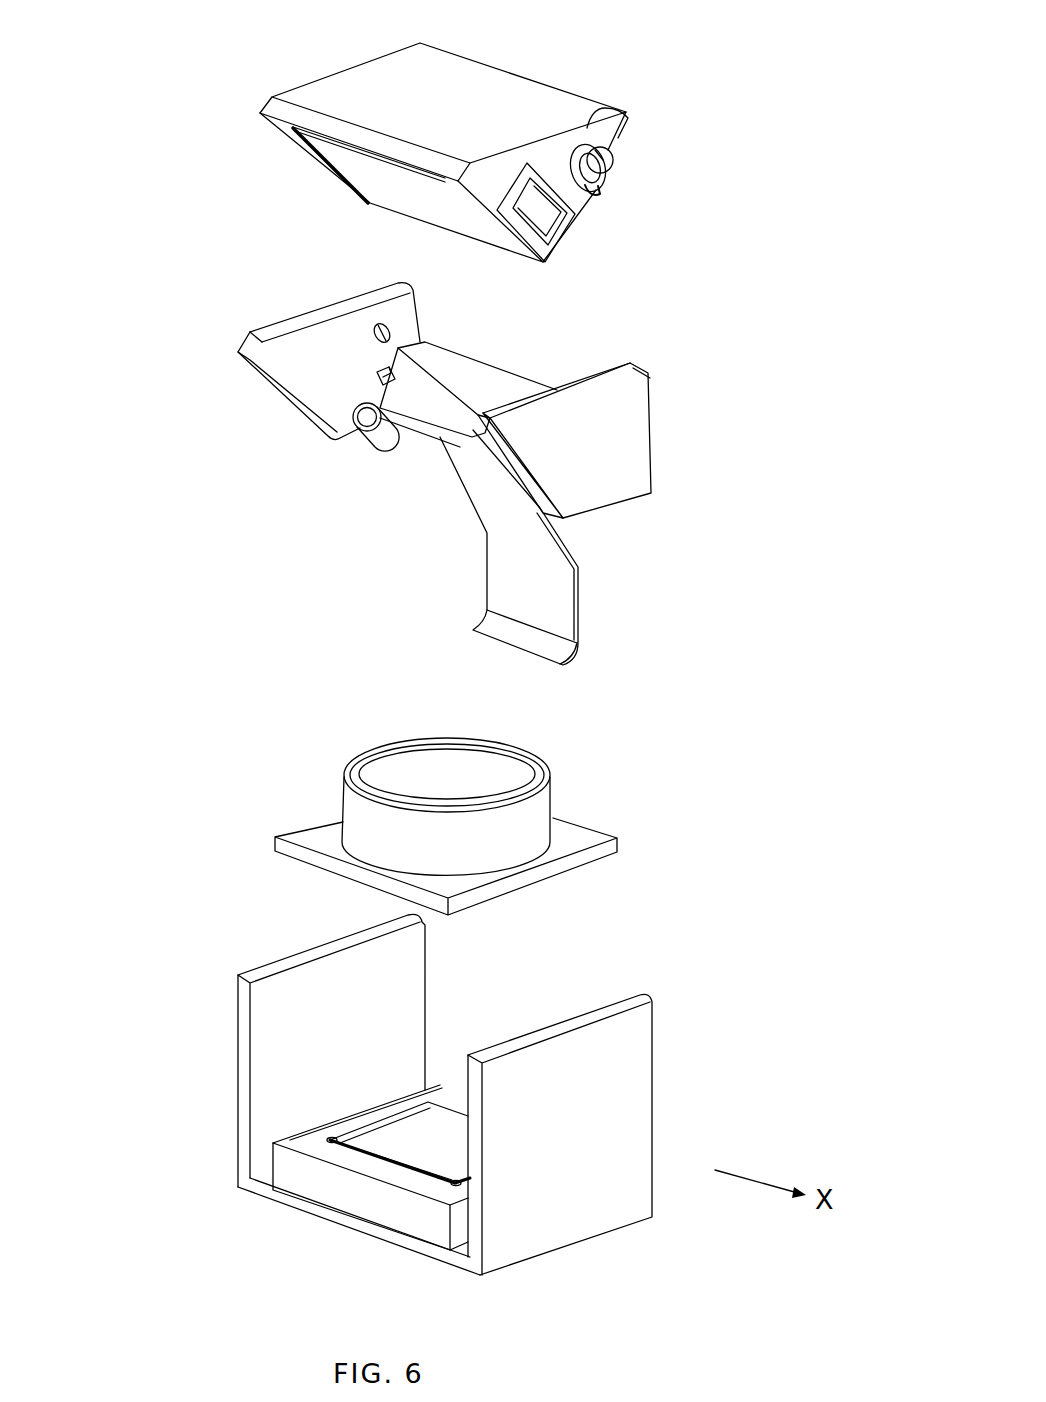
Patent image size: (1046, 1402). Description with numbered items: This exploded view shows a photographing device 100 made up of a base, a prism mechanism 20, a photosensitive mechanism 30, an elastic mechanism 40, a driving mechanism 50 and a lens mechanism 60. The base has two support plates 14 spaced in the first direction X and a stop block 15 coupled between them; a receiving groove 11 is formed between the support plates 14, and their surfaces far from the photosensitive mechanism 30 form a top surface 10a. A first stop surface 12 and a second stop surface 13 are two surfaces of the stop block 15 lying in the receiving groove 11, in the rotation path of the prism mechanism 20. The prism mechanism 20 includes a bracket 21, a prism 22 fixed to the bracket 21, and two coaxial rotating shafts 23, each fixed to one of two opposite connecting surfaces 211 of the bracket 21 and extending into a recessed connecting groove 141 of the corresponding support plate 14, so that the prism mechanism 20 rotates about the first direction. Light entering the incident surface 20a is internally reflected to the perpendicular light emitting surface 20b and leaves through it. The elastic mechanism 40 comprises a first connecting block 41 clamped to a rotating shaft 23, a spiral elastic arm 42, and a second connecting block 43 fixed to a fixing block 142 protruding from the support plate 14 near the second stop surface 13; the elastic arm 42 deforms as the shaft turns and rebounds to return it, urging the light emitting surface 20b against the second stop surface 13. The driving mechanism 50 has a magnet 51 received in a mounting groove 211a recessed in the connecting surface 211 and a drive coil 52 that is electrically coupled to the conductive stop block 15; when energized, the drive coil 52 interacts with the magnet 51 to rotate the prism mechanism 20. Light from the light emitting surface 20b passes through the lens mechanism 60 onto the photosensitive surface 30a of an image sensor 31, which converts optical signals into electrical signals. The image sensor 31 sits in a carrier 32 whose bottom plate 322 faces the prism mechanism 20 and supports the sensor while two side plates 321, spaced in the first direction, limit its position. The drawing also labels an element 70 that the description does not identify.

The photographing device 100 is at (534, 31).
The prism mechanism 20 is at (248, 99).
The incident surface 20a is at (333, 155).
The light emitting surface 20b is at (583, 203).
The bracket 21 is at (500, 83).
The connecting surface 211 is at (338, 68).
The mounting groove 211a is at (510, 197).
The prism 22 is at (385, 182).
The rotating shaft 23 is at (627, 110).
The elastic mechanism 40 is at (681, 128).
The first connecting block 41 is at (602, 164).
The elastic arm 42 is at (605, 142).
The second connecting block 43 is at (603, 195).
The driving mechanism 50 is at (637, 272).
The magnet 51 is at (545, 218).
The drive coil 52 is at (536, 245).
The top surface 10a is at (310, 320).
The receiving groove 11 is at (614, 362).
The first stop surface 12 is at (428, 352).
The second stop surface 13 is at (398, 430).
The support plate 14 is at (248, 360).
The connecting groove 141 is at (377, 326).
The fixing block 142 is at (375, 375).
The stop block 15 is at (443, 405).
The elastic member 70 is at (566, 596).
The lens mechanism 60 is at (497, 765).
The photosensitive mechanism 30 is at (152, 1132).
The photosensitive surface 30a is at (433, 1127).
The image sensor 31 is at (300, 1168).
The carrier 32 is at (243, 1153).
The side plate 321 is at (268, 1023).
The bottom plate 322 is at (328, 1215).